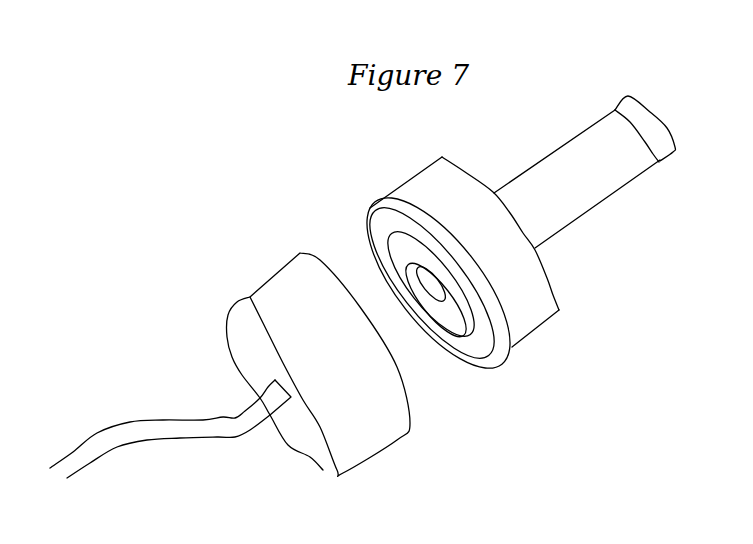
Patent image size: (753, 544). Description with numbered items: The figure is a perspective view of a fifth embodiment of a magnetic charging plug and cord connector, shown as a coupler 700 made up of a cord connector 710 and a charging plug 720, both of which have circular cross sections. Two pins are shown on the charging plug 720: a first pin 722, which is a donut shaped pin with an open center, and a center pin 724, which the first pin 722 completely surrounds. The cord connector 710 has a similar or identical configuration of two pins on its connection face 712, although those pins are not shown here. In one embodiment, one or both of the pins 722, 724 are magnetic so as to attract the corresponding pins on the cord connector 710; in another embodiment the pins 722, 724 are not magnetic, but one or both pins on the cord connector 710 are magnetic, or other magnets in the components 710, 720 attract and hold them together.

The coupler 700 is at (178, 138).
The cord connector 710 is at (327, 455).
The connection face 712 is at (333, 244).
The charging plug 720 is at (532, 328).
The first pin 722 is at (377, 228).
The center pin 724 is at (432, 292).